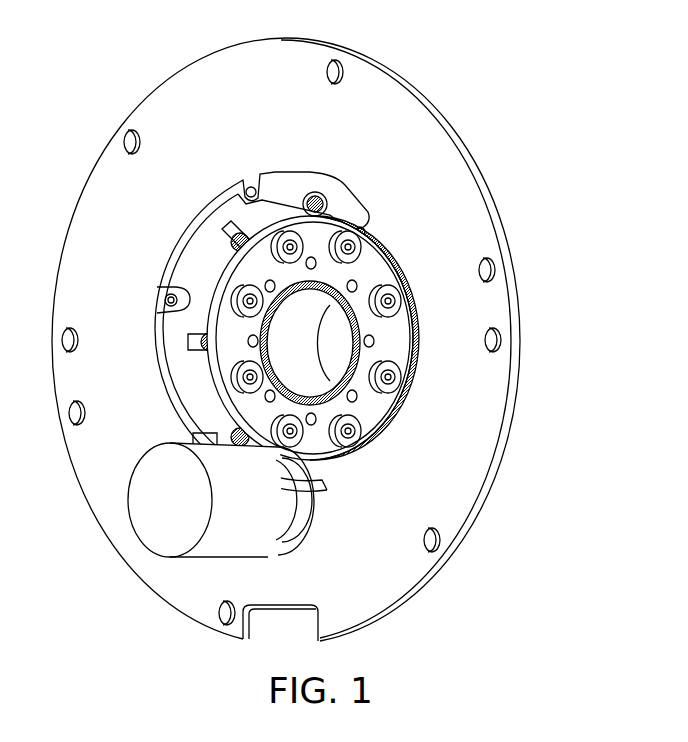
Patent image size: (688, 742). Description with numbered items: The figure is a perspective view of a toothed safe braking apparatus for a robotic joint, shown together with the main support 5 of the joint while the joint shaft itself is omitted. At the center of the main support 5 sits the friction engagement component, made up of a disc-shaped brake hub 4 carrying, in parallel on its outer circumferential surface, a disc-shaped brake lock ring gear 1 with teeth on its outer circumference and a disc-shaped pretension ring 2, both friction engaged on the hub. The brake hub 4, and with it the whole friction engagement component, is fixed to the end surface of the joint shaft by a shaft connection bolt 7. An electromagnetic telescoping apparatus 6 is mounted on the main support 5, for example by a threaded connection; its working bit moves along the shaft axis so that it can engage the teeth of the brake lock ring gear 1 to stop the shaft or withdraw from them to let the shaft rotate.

The brake lock ring gear 1 is at (352, 207).
The pretension ring 2 is at (330, 188).
The brake hub 4 is at (367, 270).
The main support 5 is at (478, 382).
The electromagnetic telescoping apparatus 6 is at (267, 539).
The shaft connection bolt 7 is at (407, 378).